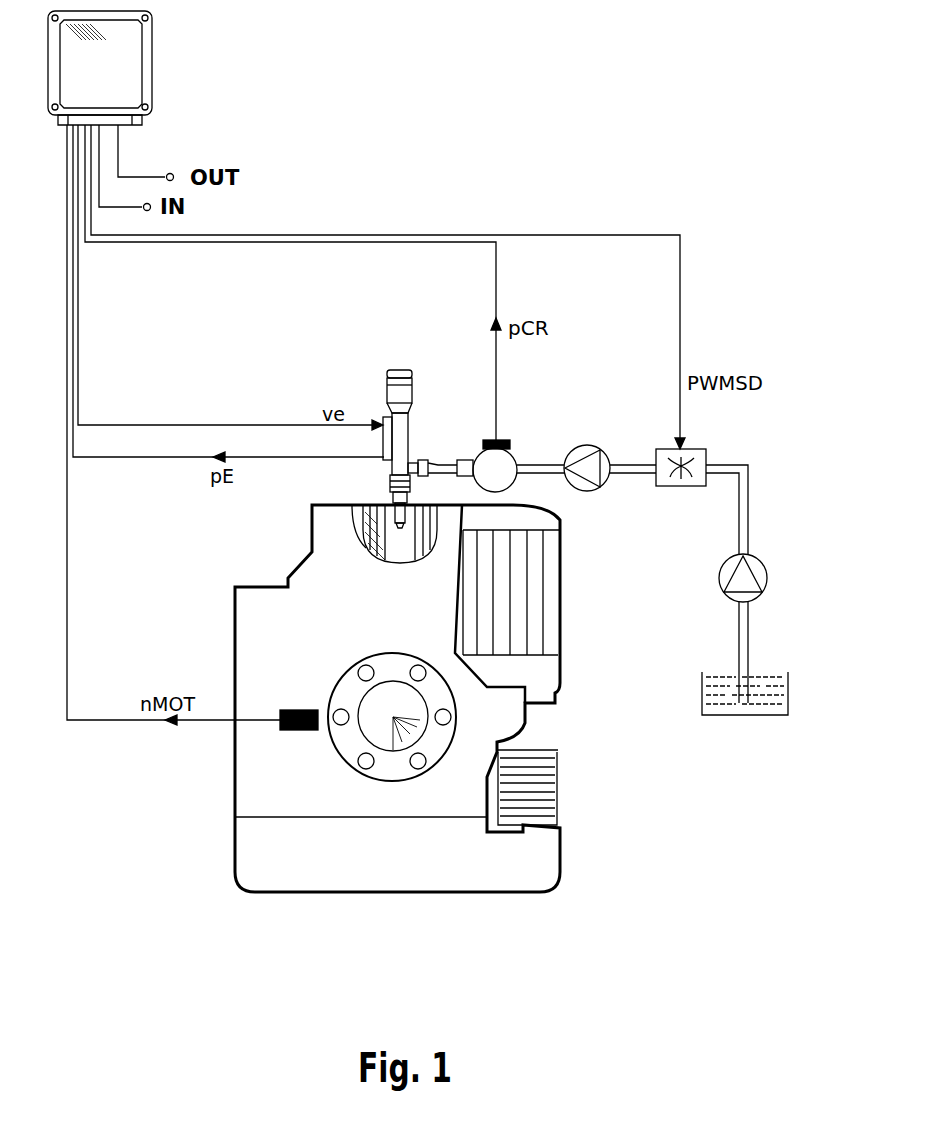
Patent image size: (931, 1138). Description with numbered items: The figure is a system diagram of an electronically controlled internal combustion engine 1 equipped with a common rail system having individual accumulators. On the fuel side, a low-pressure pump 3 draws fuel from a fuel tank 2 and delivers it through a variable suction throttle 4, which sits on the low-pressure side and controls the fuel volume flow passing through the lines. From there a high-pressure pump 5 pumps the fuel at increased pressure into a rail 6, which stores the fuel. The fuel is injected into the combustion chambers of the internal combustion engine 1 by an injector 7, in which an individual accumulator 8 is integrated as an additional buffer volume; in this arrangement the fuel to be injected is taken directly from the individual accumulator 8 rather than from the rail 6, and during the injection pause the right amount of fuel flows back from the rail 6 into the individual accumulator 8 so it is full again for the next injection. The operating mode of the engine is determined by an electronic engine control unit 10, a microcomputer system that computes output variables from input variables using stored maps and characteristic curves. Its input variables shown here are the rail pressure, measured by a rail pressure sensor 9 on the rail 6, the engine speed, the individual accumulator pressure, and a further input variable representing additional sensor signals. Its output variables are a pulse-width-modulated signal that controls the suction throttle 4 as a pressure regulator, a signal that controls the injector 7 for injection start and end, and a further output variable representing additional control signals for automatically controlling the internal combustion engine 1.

The internal combustion engine 1 is at (265, 620).
The fuel tank 2 is at (768, 682).
The low-pressure pump 3 is at (762, 573).
The suction throttle 4 is at (703, 455).
The high-pressure pump 5 is at (582, 488).
The rail 6 is at (495, 470).
The injector 7 is at (398, 423).
The individual accumulator 8 is at (407, 393).
The rail pressure sensor 9 is at (488, 441).
The electronic engine control unit 10 is at (100, 68).